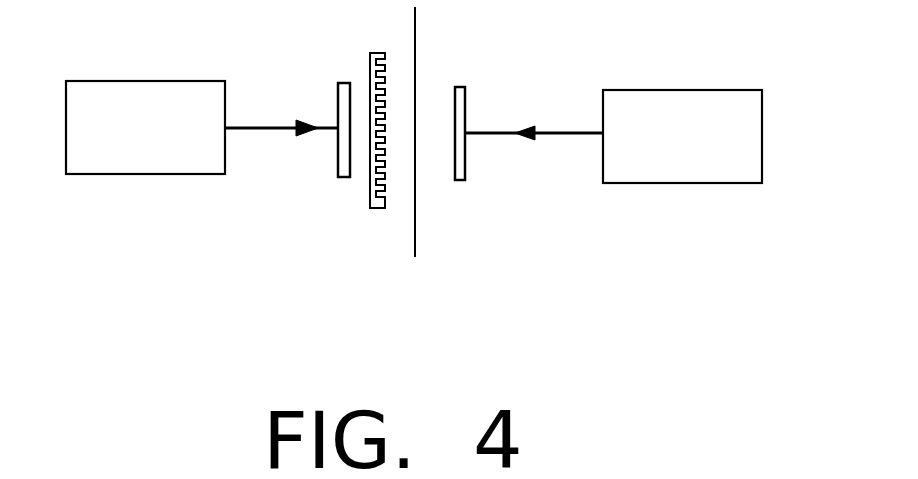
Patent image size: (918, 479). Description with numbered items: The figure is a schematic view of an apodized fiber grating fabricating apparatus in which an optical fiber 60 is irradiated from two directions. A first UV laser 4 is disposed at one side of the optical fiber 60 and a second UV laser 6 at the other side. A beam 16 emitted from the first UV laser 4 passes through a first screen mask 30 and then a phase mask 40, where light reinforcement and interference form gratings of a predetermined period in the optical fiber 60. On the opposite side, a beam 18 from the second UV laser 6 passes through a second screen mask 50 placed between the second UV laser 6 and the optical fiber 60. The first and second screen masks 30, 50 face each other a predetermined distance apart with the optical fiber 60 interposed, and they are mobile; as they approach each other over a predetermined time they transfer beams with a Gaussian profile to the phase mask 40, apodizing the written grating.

The first UV laser 4 is at (145, 80).
The second UV laser 6 is at (682, 90).
The beam 16 is at (262, 127).
The beam 18 is at (497, 128).
The first screen mask 30 is at (338, 165).
The phase mask 40 is at (375, 210).
The second screen mask 50 is at (466, 167).
The optical fiber 60 is at (415, 233).